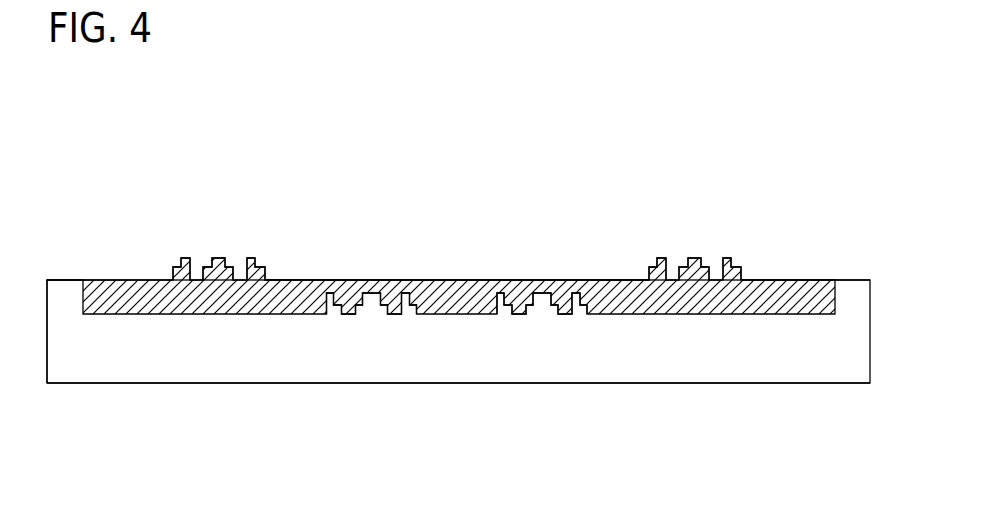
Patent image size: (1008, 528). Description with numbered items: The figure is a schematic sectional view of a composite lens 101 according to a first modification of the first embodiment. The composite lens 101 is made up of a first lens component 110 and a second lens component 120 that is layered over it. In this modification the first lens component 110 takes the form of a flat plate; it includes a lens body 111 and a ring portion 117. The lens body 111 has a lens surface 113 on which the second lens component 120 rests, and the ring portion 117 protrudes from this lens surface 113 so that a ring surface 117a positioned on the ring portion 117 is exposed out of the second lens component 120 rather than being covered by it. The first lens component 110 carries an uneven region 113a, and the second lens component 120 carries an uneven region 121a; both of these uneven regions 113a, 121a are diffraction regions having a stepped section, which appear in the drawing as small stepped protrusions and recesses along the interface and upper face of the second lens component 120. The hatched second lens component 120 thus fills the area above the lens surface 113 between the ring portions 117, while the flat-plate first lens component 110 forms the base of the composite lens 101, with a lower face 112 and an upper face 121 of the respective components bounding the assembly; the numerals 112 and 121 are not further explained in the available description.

The composite lens 101 is at (482, 177).
The first lens component 110 is at (217, 448).
The lens body 111 is at (197, 383).
The substrate bottom surface 112 is at (793, 383).
The lens surface 113 is at (122, 316).
The uneven region 113a is at (387, 280).
The ring portion 117 is at (60, 383).
The ring surface 117a is at (63, 280).
The second lens component 120 is at (777, 283).
The electrode upper surface 121 is at (317, 279).
The uneven region 121a is at (222, 240).